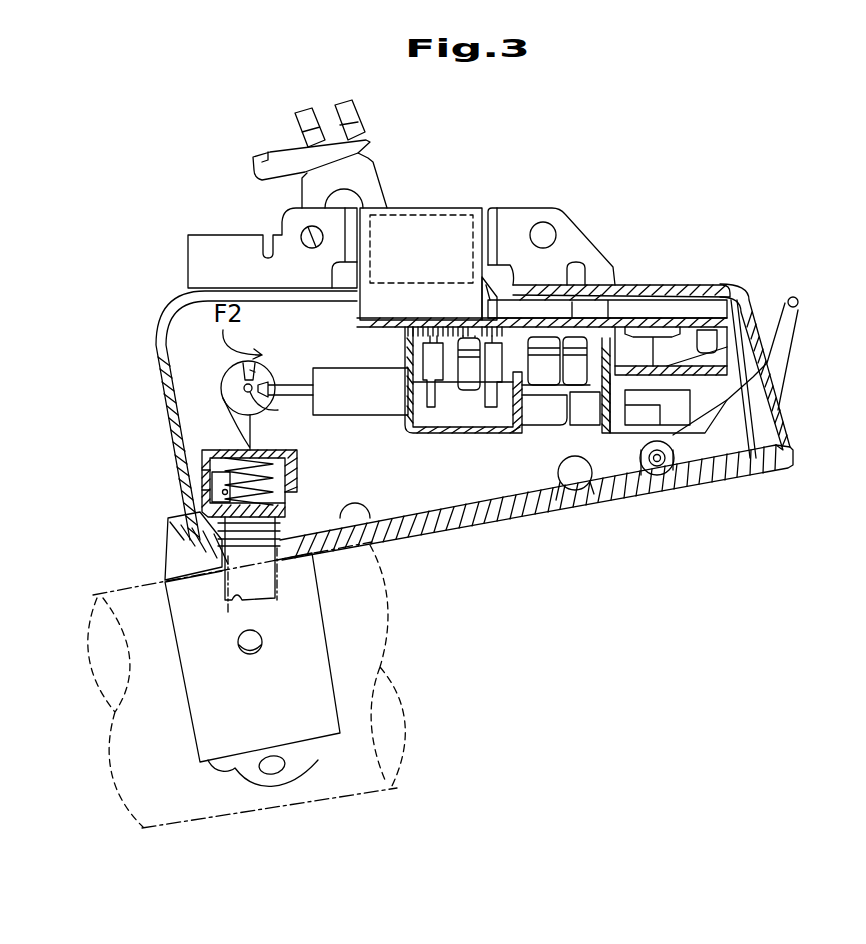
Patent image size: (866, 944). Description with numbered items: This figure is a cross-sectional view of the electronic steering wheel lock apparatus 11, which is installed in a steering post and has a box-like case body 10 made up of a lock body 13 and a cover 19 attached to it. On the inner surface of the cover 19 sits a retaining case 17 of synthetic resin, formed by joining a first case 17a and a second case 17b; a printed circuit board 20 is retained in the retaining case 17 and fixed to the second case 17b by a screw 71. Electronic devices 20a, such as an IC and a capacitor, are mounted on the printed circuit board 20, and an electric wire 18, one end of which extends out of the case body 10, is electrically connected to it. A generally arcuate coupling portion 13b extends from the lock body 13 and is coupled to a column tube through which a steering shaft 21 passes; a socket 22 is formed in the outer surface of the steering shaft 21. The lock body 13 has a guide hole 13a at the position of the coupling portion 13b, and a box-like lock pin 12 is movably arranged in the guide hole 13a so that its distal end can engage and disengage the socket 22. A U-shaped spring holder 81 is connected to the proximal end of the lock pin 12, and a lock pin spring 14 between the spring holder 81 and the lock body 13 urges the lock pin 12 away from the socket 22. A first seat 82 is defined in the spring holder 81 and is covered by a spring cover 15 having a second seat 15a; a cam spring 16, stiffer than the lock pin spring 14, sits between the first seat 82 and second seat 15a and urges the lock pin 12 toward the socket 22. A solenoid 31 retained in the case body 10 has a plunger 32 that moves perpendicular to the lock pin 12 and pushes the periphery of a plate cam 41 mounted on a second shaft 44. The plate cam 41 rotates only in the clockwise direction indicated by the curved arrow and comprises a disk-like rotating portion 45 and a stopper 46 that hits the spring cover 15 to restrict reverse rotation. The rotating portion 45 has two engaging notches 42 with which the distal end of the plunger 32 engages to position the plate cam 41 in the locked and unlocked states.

The case body 10 is at (156, 377).
The electronic steering wheel lock apparatus 11 is at (783, 222).
The lock pin 12 is at (263, 588).
The lock body 13 is at (476, 522).
The guide hole 13a is at (223, 592).
The coupling portion 13b is at (318, 620).
The lock pin spring 14 is at (276, 528).
The spring cover 15 is at (290, 453).
The second seat 15a is at (200, 462).
The cam spring 16 is at (290, 471).
The retaining case 17 is at (741, 293).
The first case 17a is at (548, 264).
The second case 17b is at (448, 435).
The electric wire 18 is at (788, 333).
The cover 19 is at (675, 287).
The printed circuit board 20 is at (705, 320).
The electronic devices 20a is at (543, 380).
The steering shaft 21 is at (310, 797).
The socket 22 is at (240, 650).
The solenoid 31 is at (380, 408).
The plunger 32 is at (305, 380).
The plate cam 41 is at (234, 374).
The engaging notches 42 is at (262, 366).
The second shaft 44 is at (270, 407).
The rotating portion 45 is at (222, 388).
The stopper 46 is at (233, 432).
The screw 71 is at (630, 288).
The spring holder 81 is at (192, 500).
The first seat 82 is at (223, 492).